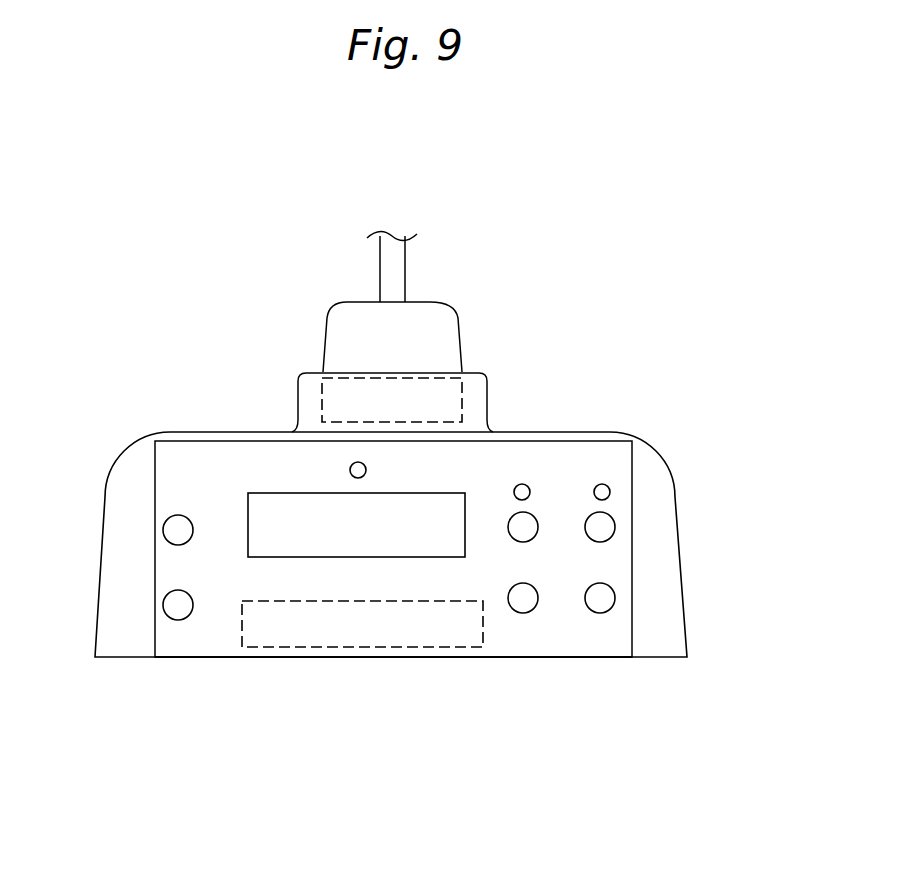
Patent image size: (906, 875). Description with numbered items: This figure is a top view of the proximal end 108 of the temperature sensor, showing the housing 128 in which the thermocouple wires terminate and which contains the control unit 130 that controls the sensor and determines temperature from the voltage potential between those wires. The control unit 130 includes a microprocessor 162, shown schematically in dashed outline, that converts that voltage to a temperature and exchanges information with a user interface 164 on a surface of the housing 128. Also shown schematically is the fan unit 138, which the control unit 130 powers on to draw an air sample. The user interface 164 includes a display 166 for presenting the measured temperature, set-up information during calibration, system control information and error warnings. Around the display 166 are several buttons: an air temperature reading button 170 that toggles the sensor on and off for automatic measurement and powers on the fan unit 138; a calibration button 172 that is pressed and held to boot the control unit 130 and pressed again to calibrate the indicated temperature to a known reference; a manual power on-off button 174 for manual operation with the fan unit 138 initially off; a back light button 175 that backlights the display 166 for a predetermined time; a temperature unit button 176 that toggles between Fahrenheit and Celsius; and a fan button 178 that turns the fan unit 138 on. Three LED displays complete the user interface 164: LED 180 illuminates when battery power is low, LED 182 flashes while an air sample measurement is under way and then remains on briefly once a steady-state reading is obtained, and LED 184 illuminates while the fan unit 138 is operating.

The proximal end 108 is at (391, 573).
The housing 128 is at (427, 367).
The control unit 130 is at (415, 672).
The fan unit 138 is at (410, 412).
The microprocessor 162 is at (435, 636).
The user interface 164 is at (222, 471).
The display 166 is at (439, 549).
The air temperature reading button 170 is at (576, 661).
The calibration button 172 is at (120, 581).
The manual power on-off button 174 is at (120, 504).
The back light button 175 is at (552, 541).
The temperature unit button 176 is at (666, 504).
The fan button 178 is at (666, 575).
The LED 180 is at (277, 420).
The LED 182 is at (591, 441).
The LED 184 is at (653, 464).